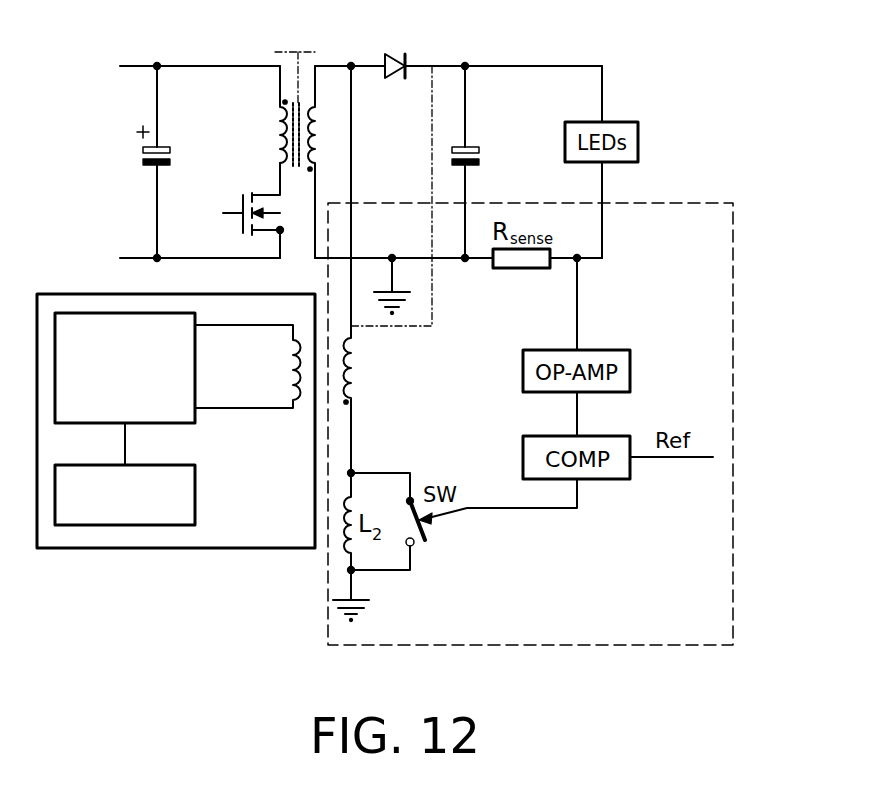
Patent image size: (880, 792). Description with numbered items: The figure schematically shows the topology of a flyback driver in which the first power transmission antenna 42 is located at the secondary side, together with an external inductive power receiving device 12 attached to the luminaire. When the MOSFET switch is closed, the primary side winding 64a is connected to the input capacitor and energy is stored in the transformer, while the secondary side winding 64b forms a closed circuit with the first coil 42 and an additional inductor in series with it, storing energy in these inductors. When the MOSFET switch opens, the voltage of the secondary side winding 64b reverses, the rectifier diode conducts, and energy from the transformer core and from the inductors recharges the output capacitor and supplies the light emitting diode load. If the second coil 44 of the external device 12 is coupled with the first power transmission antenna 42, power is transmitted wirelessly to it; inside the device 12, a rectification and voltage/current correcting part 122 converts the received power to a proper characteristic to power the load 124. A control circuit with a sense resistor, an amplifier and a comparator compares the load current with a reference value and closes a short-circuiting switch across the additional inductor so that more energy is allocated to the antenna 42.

The external inductive power receiving device 12 is at (176, 460).
The first power transmission antenna 42 is at (352, 375).
The second power receiving antenna 44 is at (292, 375).
The primary side winding 64a is at (279, 131).
The secondary side winding 64b is at (317, 129).
The rectification and voltage/current correcting part 122 is at (145, 382).
The load 124 is at (145, 508).